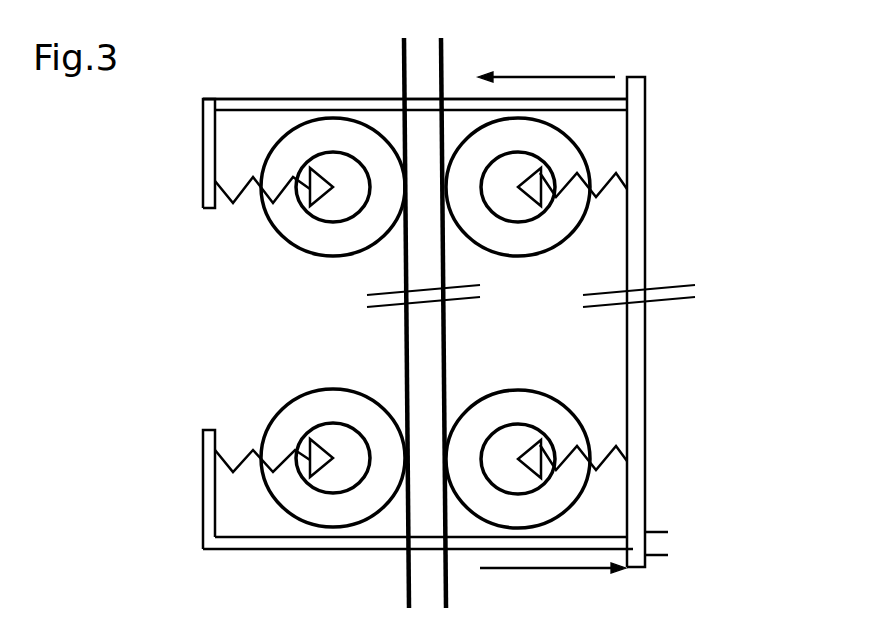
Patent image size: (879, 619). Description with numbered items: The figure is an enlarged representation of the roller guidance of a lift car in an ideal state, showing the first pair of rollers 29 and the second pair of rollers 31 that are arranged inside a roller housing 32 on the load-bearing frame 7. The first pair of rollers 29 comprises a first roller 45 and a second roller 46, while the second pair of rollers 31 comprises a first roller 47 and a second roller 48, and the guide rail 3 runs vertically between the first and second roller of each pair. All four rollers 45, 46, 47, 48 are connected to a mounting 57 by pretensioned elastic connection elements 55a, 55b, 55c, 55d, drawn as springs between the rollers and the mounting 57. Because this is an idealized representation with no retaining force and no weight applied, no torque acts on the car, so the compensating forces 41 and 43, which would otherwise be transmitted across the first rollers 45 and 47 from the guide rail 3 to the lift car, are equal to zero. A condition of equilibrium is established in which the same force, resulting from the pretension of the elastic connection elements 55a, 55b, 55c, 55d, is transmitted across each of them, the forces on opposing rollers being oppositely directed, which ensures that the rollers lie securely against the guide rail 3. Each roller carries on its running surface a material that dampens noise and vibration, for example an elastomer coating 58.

The guide rail 3 is at (432, 63).
The load-bearing frame 7 is at (645, 152).
The first pair of rollers 29 is at (603, 390).
The second pair of rollers 31 is at (606, 123).
The roller housing 32 is at (350, 98).
The compensating force 41 is at (533, 570).
The compensating force 43 is at (565, 75).
The first roller of the first pair of rollers 45 is at (557, 423).
The second roller of the first pair of rollers 46 is at (328, 517).
The first roller of the second pair of rollers 47 is at (305, 138).
The second roller of the second pair of rollers 48 is at (567, 152).
The elastic connection element 55a is at (603, 462).
The elastic connection element 55b is at (607, 190).
The elastic connection element 55c is at (240, 187).
The elastic connection element 55d is at (230, 467).
The mounting 57 is at (210, 183).
The elastomer coating 58 is at (332, 245).